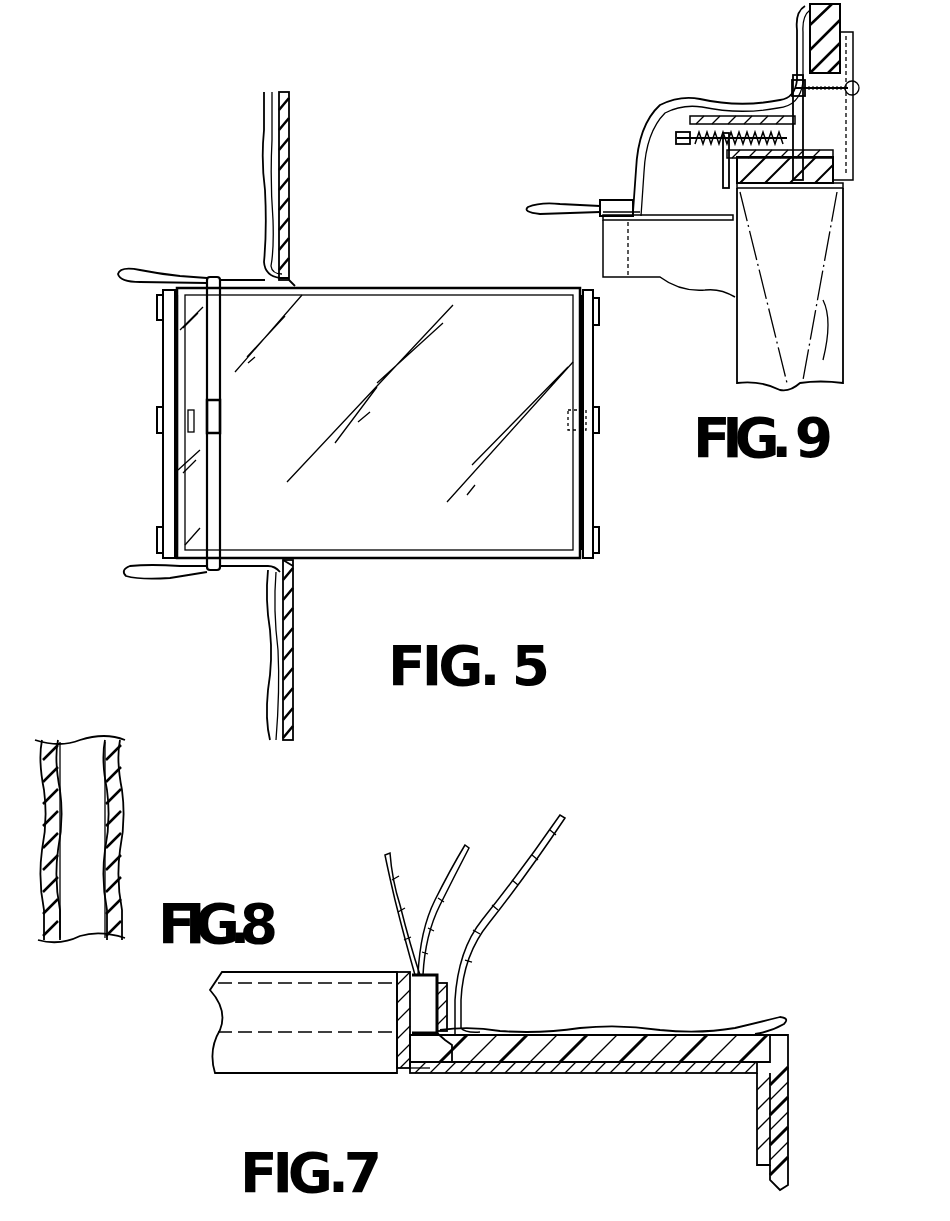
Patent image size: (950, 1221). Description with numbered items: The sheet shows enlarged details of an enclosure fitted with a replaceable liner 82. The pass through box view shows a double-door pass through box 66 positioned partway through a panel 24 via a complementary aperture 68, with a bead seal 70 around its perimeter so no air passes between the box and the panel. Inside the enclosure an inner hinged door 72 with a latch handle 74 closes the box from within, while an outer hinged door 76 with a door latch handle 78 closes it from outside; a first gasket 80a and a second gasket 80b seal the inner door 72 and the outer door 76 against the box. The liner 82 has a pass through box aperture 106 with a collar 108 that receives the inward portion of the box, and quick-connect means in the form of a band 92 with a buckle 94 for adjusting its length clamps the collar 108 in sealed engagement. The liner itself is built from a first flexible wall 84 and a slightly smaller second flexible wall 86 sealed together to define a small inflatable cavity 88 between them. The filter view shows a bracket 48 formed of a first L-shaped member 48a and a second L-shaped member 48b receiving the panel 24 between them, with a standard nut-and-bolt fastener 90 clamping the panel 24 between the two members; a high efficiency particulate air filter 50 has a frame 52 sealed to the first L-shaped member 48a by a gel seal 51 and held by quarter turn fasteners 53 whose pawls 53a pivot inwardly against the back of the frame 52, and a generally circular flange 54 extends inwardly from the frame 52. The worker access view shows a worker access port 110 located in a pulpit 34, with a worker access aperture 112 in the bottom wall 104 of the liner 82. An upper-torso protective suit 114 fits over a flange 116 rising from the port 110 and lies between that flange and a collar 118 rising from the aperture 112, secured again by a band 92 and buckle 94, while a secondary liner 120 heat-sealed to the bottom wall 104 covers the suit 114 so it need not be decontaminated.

In FIG. 9, the panel 24 is at (812, 30).
In FIG. 7, the pulpit 34 is at (578, 1075).
In FIG. 9, the bracket 48 is at (790, 105).
In FIG. 9, the first L-shaped member 48a is at (840, 135).
In FIG. 9, the second L-shaped member 48b is at (805, 72).
In FIG. 9, the high efficiency particulate air filter 50 is at (818, 383).
In FIG. 9, the gel seal 51 is at (823, 183).
In FIG. 9, the frame 52 is at (820, 190).
In FIG. 9, the quarter turn fastener 53 is at (680, 128).
In FIG. 9, the pawl 53a is at (723, 165).
In FIG. 9, the flange 54 is at (683, 222).
In FIG. 5, the double-door pass through box 66 is at (406, 267).
In FIG. 5, the aperture 68 is at (294, 568).
In FIG. 5, the bead seal 70 is at (292, 280).
In FIG. 5, the inner hinged door 72 is at (163, 478).
In FIG. 5, the latch handle 74 is at (157, 424).
In FIG. 5, the outer hinged door 76 is at (593, 497).
In FIG. 5, the door latch handle 78 is at (599, 420).
In FIG. 5, the first gasket 80a is at (170, 365).
In FIG. 5, the second gasket 80b is at (583, 473).
In FIG. 9, the replaceable liner 82 is at (708, 96).
In FIG. 7, the replaceable liner 82 is at (788, 1128).
In FIG. 5, the first flexible wall 84 is at (287, 128).
In FIG. 8, the first flexible wall 84 is at (52, 740).
In FIG. 5, the second flexible wall 86 is at (264, 122).
In FIG. 8, the second flexible wall 86 is at (112, 838).
In FIG. 5, the inflatable cavity 88 is at (272, 160).
In FIG. 8, the inflatable cavity 88 is at (82, 938).
In FIG. 9, the bolt 90 is at (825, 101).
In FIG. 5, the band 92 is at (212, 277).
In FIG. 7, the band 92 is at (448, 990).
In FIG. 5, the buckle 94 is at (220, 415).
In FIG. 7, the bottom wall 104 is at (675, 1050).
In FIG. 5, the pass through box aperture 106 is at (255, 278).
In FIG. 5, the collar 108 is at (140, 272).
In FIG. 7, the worker access port 110 is at (358, 1073).
In FIG. 7, the worker access aperture 112 is at (420, 1070).
In FIG. 7, the upper-torso protective suit 114 is at (446, 865).
In FIG. 7, the flange 116 is at (400, 1000).
In FIG. 7, the collar 118 is at (447, 980).
In FIG. 7, the secondary liner 120 is at (540, 840).